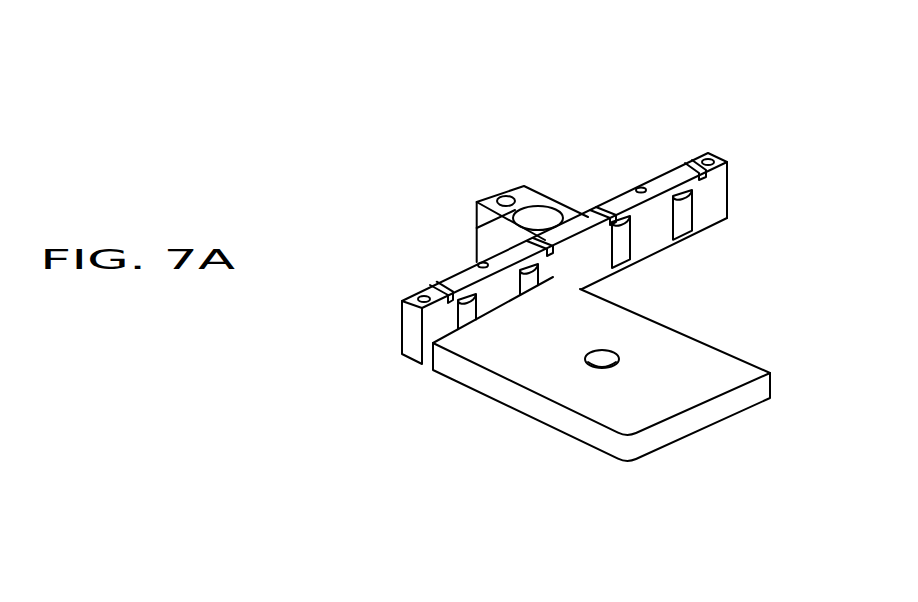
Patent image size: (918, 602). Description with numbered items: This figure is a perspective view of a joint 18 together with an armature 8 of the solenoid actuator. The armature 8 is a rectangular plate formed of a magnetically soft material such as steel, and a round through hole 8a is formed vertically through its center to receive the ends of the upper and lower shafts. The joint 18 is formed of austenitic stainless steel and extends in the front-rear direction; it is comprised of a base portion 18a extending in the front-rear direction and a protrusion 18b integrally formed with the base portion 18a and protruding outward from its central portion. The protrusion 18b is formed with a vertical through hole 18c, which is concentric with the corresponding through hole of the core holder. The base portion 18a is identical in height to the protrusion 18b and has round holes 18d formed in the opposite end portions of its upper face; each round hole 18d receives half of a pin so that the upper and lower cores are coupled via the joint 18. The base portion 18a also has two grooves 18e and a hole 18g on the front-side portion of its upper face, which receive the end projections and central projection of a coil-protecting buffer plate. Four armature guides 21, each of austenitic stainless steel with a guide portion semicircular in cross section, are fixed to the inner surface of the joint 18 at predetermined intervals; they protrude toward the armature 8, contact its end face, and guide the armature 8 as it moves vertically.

The armature 8 is at (748, 360).
The round through hole 8a is at (600, 356).
The joint 18 is at (732, 88).
The base portion 18a is at (403, 331).
The protrusion 18b is at (490, 206).
The vertical through hole 18c is at (539, 208).
The round hole 18d is at (418, 295).
The groove 18e is at (436, 284).
The hole 18g is at (527, 241).
The armature guide 21 is at (530, 294).